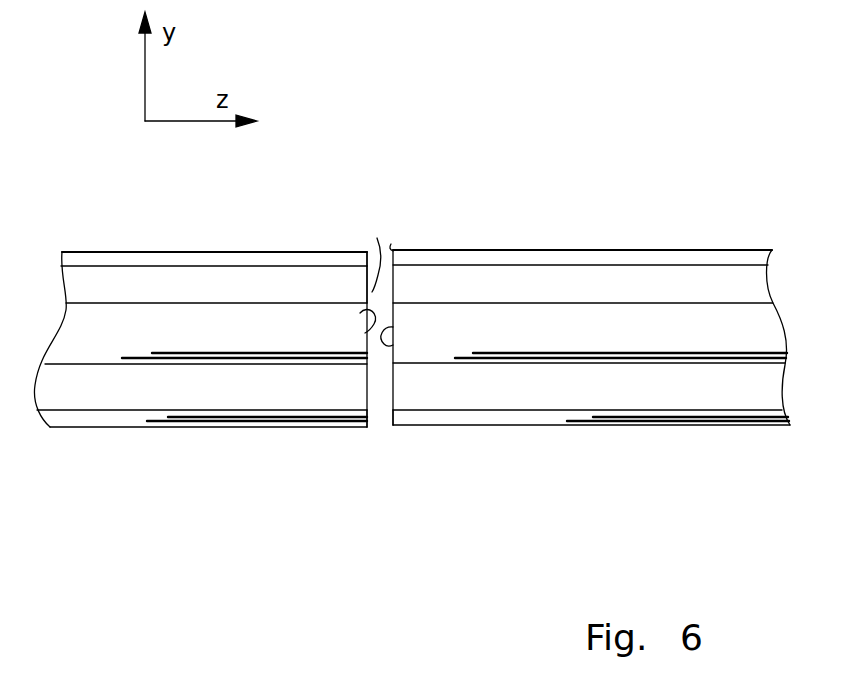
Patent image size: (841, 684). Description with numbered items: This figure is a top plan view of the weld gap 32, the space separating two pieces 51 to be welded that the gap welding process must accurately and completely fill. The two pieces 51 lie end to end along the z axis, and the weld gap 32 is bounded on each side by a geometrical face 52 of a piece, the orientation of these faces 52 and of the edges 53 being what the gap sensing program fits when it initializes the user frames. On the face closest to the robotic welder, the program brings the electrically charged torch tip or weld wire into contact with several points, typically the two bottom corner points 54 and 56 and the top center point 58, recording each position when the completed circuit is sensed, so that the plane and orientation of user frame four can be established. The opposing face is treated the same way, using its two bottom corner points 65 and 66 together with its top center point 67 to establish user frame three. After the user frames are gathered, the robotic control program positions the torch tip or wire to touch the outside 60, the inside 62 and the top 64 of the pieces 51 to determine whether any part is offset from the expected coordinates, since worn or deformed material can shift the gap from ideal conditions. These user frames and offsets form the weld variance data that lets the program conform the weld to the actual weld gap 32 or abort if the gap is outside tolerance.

The weld gap 32 is at (380, 397).
The pieces to be welded 51 is at (217, 275).
The face 52 is at (377, 238).
The edges 53 is at (366, 302).
The bottom corner point 54 is at (367, 425).
The bottom corner point 56 is at (365, 250).
The top center point 58 is at (365, 333).
The outside 60 is at (367, 365).
The inside 62 is at (360, 313).
The top 64 is at (303, 328).
The bottom corner point 65 is at (393, 425).
The bottom corner point 66 is at (391, 244).
The top center point 67 is at (393, 327).